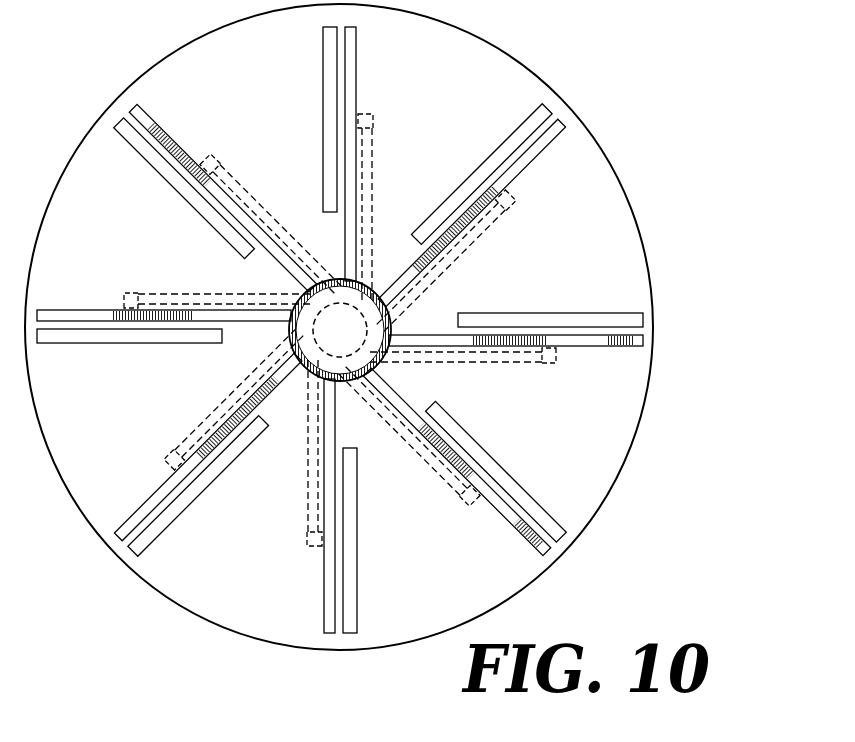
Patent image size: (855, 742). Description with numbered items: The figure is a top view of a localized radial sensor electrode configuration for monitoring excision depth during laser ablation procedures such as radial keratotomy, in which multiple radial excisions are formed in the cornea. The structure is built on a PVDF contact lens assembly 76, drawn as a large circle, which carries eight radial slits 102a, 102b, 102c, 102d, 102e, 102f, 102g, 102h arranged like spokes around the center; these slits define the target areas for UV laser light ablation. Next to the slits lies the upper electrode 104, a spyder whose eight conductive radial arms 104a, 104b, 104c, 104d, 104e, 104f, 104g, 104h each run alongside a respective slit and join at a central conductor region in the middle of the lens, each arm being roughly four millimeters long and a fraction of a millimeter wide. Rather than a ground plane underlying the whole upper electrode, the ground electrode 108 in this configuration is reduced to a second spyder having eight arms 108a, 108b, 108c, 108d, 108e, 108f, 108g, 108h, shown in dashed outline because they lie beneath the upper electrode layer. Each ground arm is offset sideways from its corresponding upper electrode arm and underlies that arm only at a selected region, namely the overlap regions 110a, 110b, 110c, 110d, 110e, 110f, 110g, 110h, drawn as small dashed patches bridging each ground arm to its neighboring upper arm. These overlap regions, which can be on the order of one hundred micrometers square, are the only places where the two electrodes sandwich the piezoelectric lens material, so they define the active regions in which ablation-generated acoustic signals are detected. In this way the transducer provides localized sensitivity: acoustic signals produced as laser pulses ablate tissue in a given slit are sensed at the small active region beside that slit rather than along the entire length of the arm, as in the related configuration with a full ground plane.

The contact lens assembly 76 is at (506, 604).
The upper electrode 104 is at (360, 50).
The ground electrode 108 is at (376, 153).
The radial slit 102a is at (322, 53).
The radial slit 102b is at (528, 121).
The radial slit 102c is at (540, 313).
The radial slit 102d is at (500, 476).
The radial slit 102e is at (357, 590).
The radial slit 102f is at (160, 525).
The radial slit 102g is at (165, 343).
The radial slit 102h is at (165, 172).
The conductive radial arm 104a is at (358, 94).
The conductive radial arm 104b is at (520, 160).
The conductive radial arm 104c is at (575, 346).
The conductive radial arm 104d is at (520, 540).
The conductive radial arm 104e is at (326, 578).
The conductive radial arm 104f is at (155, 490).
The conductive radial arm 104g is at (113, 314).
The conductive radial arm 104h is at (158, 118).
The ground electrode arm 108a is at (372, 184).
The ground electrode arm 108b is at (468, 238).
The ground electrode arm 108c is at (485, 362).
The ground electrode arm 108d is at (458, 500).
The ground electrode arm 108e is at (306, 478).
The ground electrode arm 108f is at (225, 400).
The ground electrode arm 108g is at (250, 290).
The ground electrode arm 108h is at (245, 180).
The overlap region 110a is at (374, 117).
The overlap region 110b is at (505, 196).
The overlap region 110c is at (548, 364).
The overlap region 110d is at (470, 518).
The overlap region 110e is at (310, 545).
The overlap region 110f is at (175, 465).
The overlap region 110g is at (133, 290).
The overlap region 110h is at (207, 157).